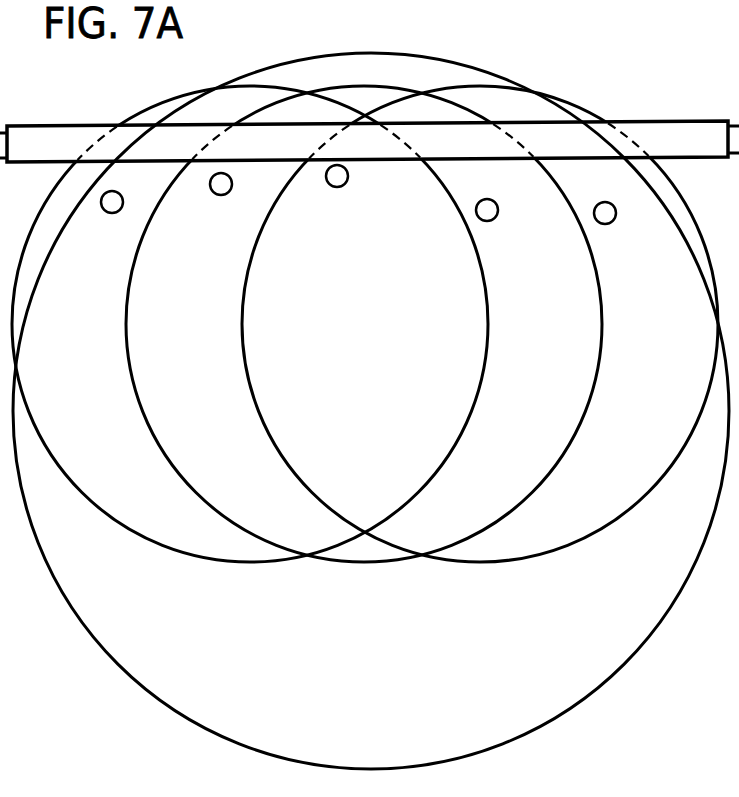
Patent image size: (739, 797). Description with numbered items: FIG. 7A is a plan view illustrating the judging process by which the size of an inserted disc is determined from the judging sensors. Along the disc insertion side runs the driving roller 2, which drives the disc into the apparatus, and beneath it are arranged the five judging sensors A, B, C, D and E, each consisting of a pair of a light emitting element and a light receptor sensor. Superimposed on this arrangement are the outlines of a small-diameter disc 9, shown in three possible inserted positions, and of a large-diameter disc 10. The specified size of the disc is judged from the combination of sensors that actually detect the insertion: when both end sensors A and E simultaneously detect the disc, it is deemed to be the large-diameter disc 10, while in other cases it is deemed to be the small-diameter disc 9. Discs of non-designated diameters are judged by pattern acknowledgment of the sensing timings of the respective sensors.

The driving roller 2 is at (662, 126).
The small-diameter disc 9 is at (190, 544).
The large-diameter disc 10 is at (614, 652).
The judging sensor A is at (110, 213).
The judging sensor B is at (218, 195).
The judging sensor C is at (334, 188).
The judging sensor D is at (490, 222).
The judging sensor E is at (608, 225).